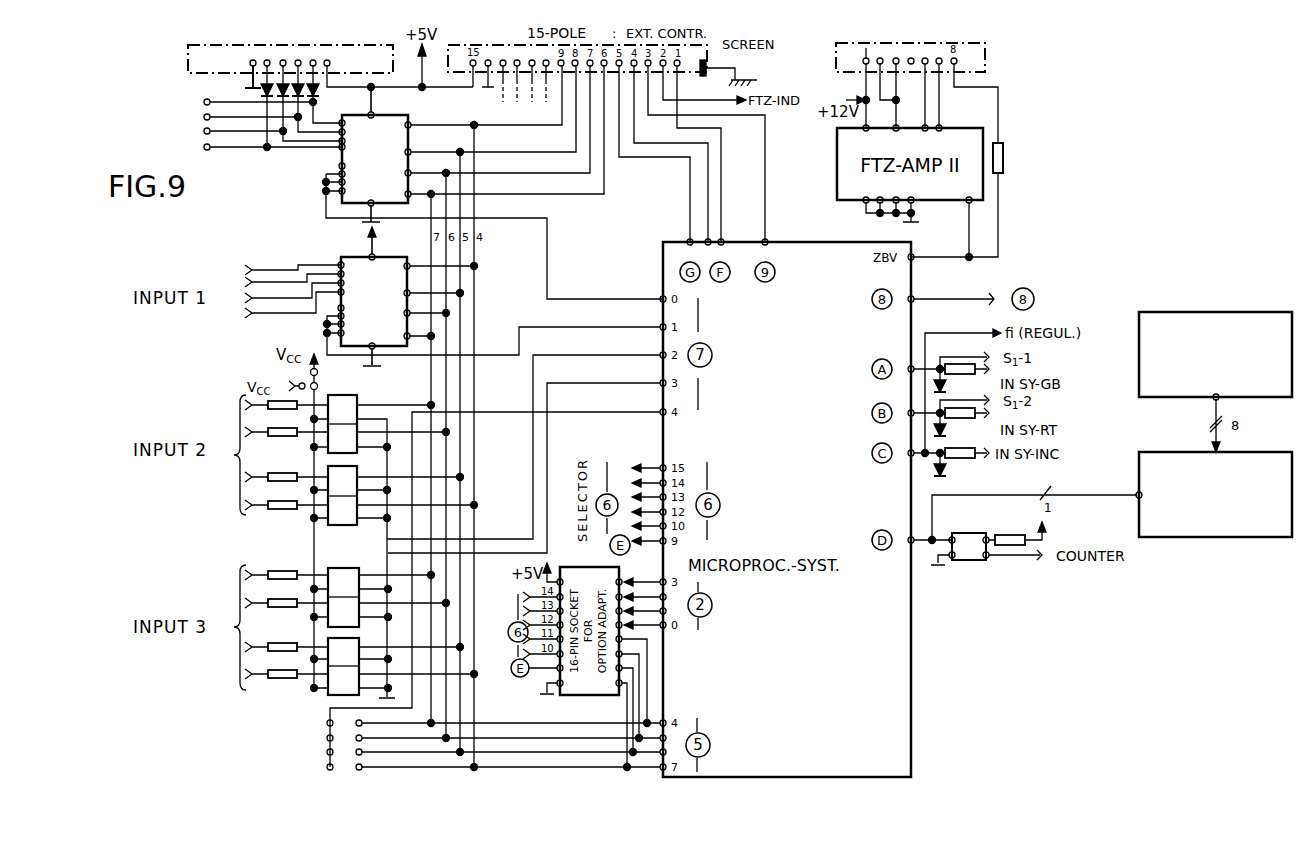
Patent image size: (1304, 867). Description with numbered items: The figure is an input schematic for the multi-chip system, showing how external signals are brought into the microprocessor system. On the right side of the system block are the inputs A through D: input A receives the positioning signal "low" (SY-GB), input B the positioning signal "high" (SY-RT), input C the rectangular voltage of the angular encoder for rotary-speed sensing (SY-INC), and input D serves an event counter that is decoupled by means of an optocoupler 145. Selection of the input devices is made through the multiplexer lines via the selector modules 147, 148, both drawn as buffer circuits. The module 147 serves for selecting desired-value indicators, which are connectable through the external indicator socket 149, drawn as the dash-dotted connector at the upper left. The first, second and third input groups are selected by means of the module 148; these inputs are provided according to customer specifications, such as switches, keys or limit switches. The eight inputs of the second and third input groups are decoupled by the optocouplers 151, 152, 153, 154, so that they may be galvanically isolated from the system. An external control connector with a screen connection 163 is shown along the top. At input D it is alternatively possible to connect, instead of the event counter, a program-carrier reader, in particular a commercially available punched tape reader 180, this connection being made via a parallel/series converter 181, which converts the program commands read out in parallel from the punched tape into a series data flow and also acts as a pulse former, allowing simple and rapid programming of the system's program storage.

The external indicator socket 149 is at (190, 73).
The selector module 147 is at (386, 115).
The selector module 148 is at (357, 257).
The optocoupler 151 is at (345, 399).
The optocoupler 152 is at (354, 474).
The optocoupler 153 is at (336, 570).
The optocoupler 154 is at (328, 697).
The screen connection 163 is at (704, 78).
The optocoupler 145 is at (981, 526).
The punched tape reader 180 is at (1198, 312).
The parallel/series converter 181 is at (1207, 537).